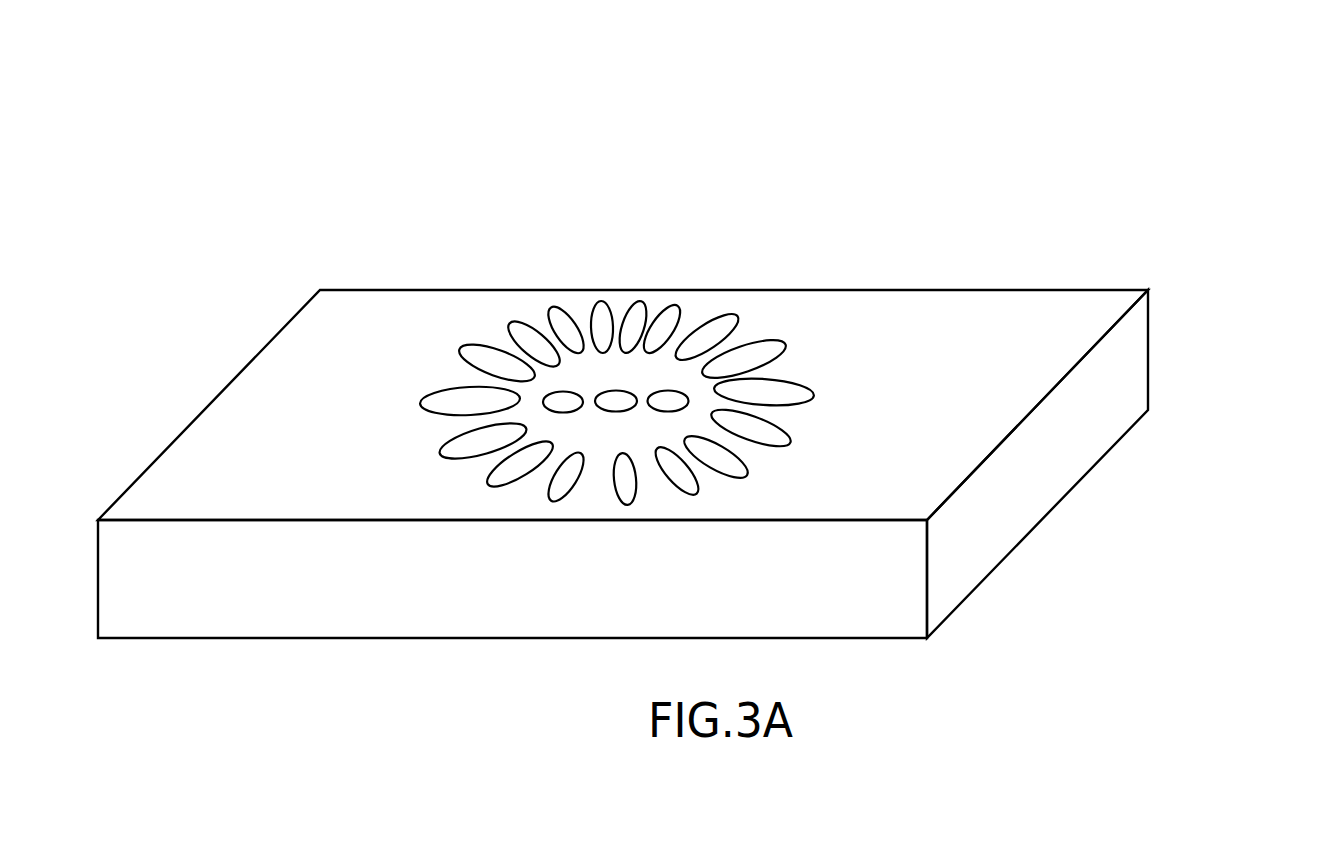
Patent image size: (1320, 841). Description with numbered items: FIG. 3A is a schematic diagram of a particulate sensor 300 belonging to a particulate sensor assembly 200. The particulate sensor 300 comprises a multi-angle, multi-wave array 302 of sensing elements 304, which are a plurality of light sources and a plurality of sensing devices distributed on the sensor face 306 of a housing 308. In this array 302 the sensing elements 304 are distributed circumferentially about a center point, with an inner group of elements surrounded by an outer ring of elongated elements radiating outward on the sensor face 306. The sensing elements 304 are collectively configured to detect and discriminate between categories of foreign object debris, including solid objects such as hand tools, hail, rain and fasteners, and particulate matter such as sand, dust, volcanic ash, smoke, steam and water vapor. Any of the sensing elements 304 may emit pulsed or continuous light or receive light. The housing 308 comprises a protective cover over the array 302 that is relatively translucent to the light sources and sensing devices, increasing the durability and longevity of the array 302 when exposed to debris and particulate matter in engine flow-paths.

The particulate sensor assembly 200 is at (1088, 102).
The particulate sensor 300 is at (1116, 200).
The multi-angle, multi-wave array 302 is at (836, 345).
The sensing elements 304 is at (459, 350).
The sensor face 306 is at (1008, 308).
The housing 308 is at (1196, 338).